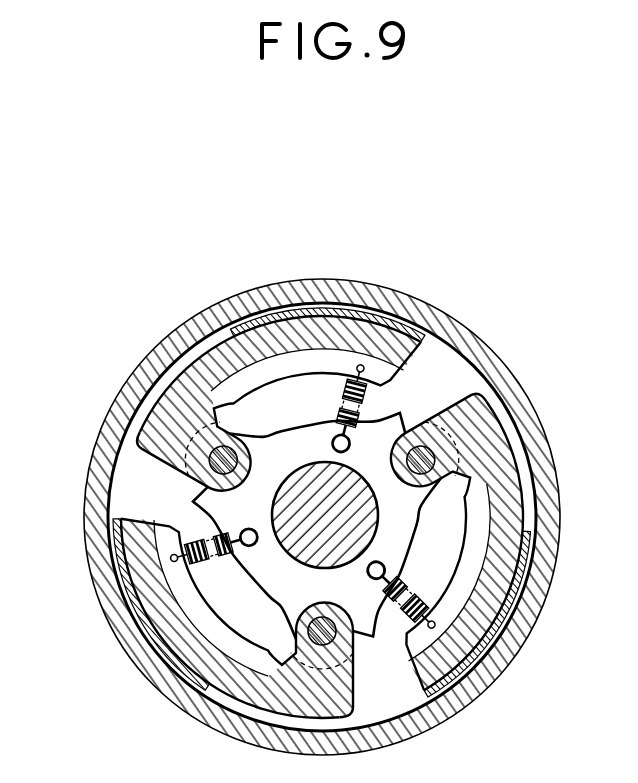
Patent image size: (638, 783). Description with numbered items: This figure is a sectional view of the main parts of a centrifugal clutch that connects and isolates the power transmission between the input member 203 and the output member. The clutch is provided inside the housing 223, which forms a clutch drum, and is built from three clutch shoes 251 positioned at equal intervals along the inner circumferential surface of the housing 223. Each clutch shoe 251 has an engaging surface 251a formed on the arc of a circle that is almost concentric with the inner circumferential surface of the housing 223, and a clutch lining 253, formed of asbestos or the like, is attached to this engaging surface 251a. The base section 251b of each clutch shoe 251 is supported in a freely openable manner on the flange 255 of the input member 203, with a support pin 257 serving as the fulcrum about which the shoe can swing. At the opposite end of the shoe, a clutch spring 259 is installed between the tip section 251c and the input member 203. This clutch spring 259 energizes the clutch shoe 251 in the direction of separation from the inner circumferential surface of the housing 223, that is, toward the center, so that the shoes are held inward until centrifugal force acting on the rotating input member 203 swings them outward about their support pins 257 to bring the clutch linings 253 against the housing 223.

The input member 203 is at (358, 470).
The housing 223 is at (425, 300).
The clutch shoe 251 is at (255, 322).
The engaging surface 251a is at (310, 320).
The base section 251b is at (458, 462).
The tip section 251c is at (383, 330).
The clutch lining 253 is at (340, 317).
The flange 255 is at (195, 512).
The support pin 257 is at (470, 377).
The clutch spring 259 is at (372, 378).